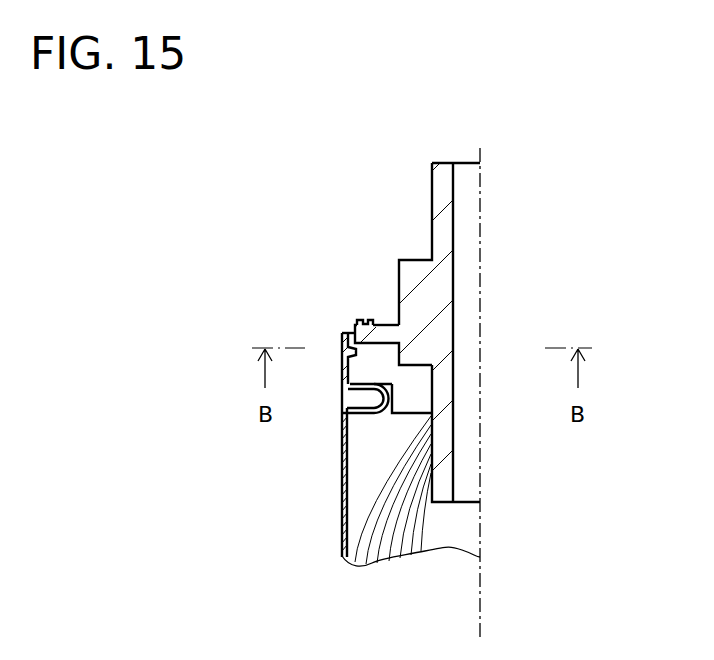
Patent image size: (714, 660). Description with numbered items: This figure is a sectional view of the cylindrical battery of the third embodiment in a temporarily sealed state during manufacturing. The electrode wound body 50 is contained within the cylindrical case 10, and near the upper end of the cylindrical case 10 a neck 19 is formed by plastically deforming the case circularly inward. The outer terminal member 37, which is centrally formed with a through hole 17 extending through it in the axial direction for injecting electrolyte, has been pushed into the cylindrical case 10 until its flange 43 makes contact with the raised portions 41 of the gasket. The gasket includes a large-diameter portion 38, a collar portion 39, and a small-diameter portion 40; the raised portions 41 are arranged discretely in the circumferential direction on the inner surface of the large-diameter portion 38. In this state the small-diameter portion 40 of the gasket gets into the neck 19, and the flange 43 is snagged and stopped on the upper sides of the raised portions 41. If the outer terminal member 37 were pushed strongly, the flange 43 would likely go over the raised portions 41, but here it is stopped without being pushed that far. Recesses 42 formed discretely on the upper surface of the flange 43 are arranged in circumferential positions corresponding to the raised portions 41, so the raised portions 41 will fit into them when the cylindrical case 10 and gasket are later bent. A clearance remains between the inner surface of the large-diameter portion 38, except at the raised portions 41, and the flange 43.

The cylindrical case 10 is at (342, 494).
The through hole 17 is at (480, 219).
The neck 19 is at (366, 411).
The outer terminal member 37 is at (430, 257).
The large-diameter portion 38 is at (350, 336).
The collar portion 39 is at (386, 373).
The small-diameter portion 40 is at (389, 402).
The raised portions 41 is at (344, 352).
The recesses 42 is at (375, 323).
The flange 43 is at (360, 320).
The electrode wound body 50 is at (383, 547).